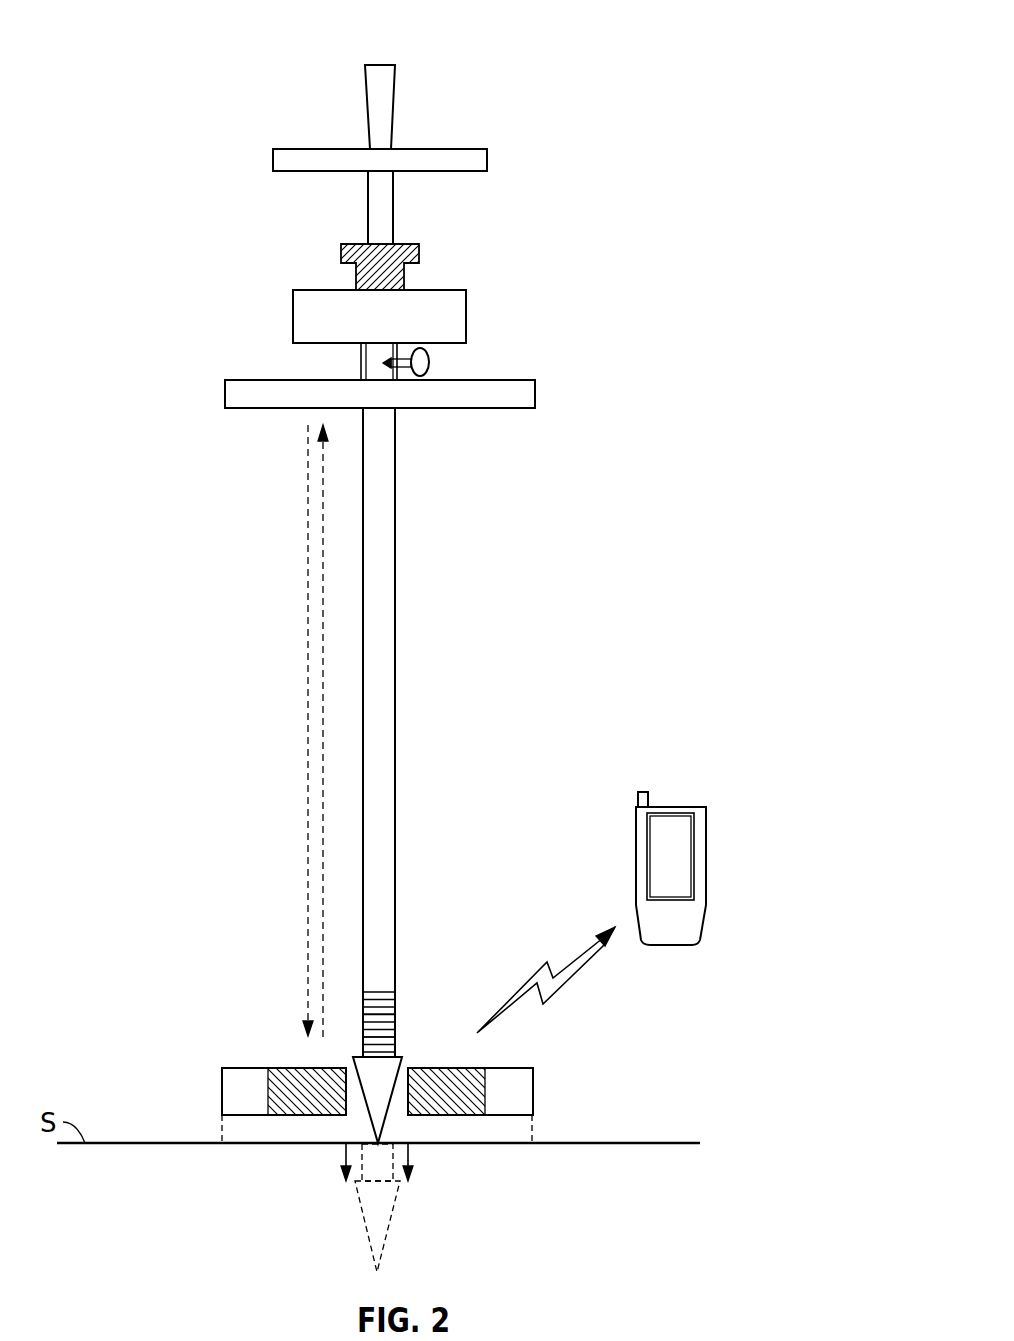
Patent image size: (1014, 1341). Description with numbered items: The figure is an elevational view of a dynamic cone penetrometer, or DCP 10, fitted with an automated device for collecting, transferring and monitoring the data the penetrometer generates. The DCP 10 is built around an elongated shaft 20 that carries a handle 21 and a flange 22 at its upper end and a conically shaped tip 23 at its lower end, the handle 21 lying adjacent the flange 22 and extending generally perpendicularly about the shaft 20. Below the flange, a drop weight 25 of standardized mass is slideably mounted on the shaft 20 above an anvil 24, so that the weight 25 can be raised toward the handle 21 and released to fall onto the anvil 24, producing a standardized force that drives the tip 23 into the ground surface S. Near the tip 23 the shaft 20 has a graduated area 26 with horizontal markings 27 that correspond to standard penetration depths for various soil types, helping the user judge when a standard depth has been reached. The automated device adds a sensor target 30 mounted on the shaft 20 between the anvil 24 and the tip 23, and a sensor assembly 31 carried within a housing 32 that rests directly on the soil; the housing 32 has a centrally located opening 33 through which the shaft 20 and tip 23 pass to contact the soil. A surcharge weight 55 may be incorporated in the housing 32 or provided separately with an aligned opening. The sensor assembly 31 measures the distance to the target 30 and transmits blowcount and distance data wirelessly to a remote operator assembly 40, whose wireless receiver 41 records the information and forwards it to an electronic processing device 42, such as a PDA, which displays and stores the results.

The DCP 10 is at (216, 52).
The elongated shaft 20 is at (388, 608).
The handle 21 is at (395, 107).
The flange 22 is at (487, 158).
The conically shaped tip 23 is at (368, 1112).
The anvil 24 is at (466, 317).
The drop weight 25 is at (419, 254).
The graduated area 26 is at (413, 999).
The horizontal markings 27 is at (386, 1024).
The sensor target 30 is at (225, 393).
The sensor assembly 31 is at (276, 1079).
The housing 32 is at (222, 1108).
The centrally located opening 33 is at (394, 1130).
The remote operator assembly 40 is at (727, 921).
The wireless receiver 41 is at (650, 800).
The electronic processing device 42 is at (706, 857).
The surcharge weight 55 is at (535, 1128).